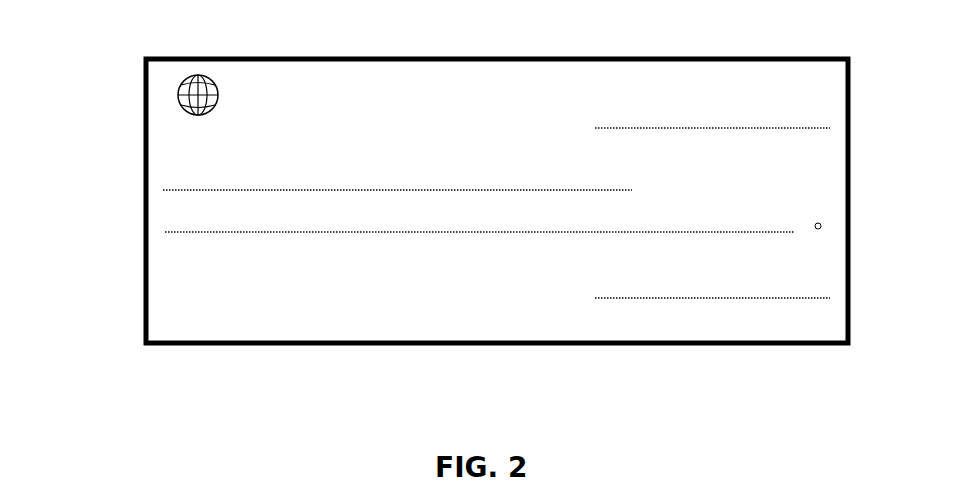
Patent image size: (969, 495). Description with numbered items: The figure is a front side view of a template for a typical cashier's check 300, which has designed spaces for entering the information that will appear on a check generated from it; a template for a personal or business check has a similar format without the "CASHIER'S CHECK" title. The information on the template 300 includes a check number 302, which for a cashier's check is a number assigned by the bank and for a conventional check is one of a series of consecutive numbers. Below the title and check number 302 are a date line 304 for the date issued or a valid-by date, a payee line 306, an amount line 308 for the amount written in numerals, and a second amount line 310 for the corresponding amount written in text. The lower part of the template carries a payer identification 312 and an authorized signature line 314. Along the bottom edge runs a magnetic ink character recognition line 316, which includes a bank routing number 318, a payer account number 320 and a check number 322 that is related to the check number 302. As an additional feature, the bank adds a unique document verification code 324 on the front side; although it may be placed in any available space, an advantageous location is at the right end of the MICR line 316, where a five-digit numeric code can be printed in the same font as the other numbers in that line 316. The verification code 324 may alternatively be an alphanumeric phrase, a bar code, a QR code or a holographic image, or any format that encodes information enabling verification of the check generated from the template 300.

The cashier's check template 300 is at (122, 72).
The check number 302 is at (760, 72).
The date line 304 is at (792, 108).
The payee line 306 is at (157, 168).
The amount line 308 is at (805, 183).
The amount line 310 is at (157, 216).
The payer identification 312 is at (157, 270).
The authorized signature line 314 is at (827, 280).
The magnetic ink character recognition (MICR) line 316 is at (218, 328).
The bank routing number 318 is at (373, 352).
The payer account number 320 is at (496, 352).
The check number 322 is at (622, 352).
The document verification code 324 is at (750, 355).